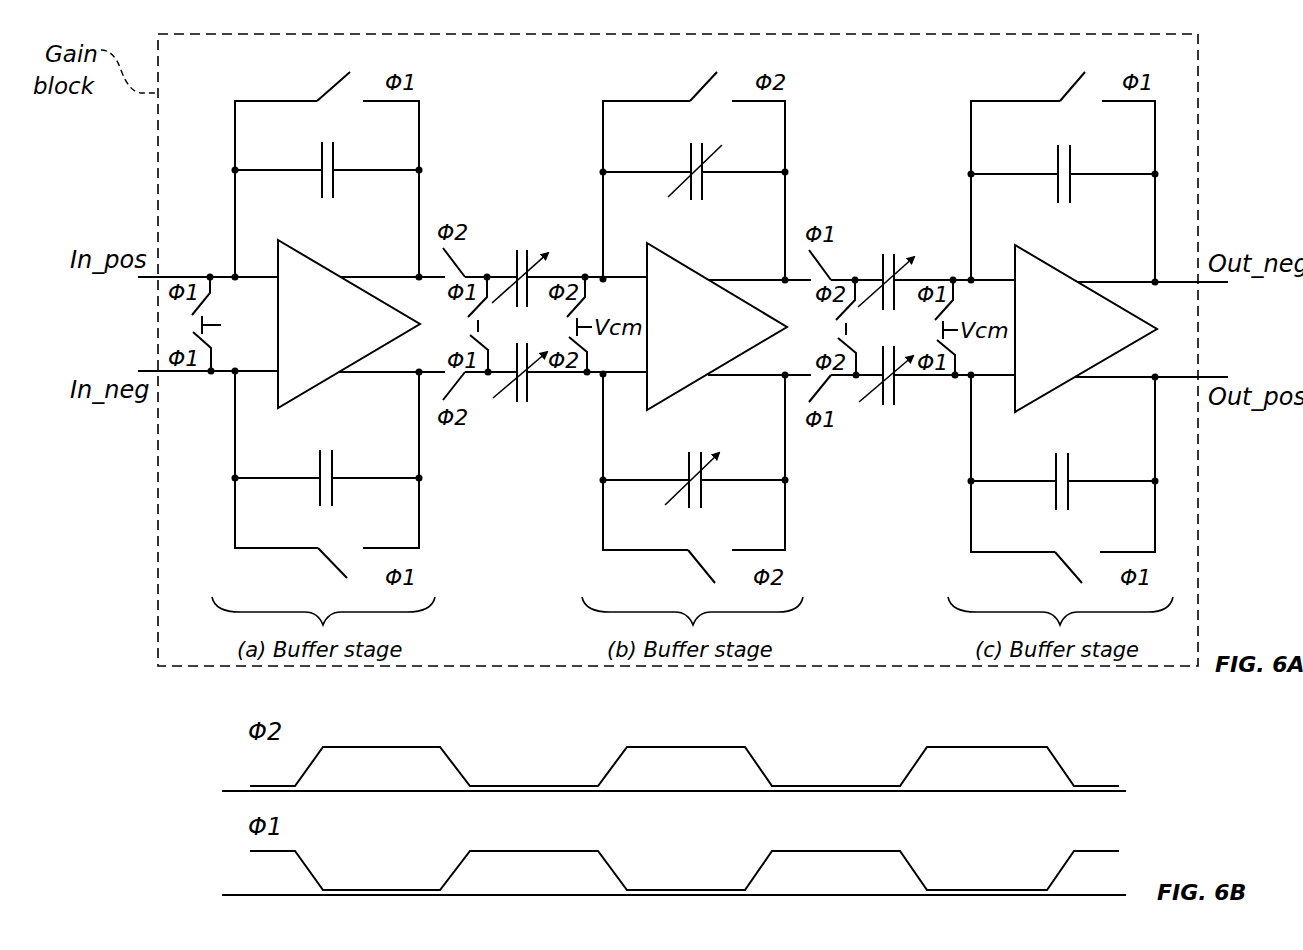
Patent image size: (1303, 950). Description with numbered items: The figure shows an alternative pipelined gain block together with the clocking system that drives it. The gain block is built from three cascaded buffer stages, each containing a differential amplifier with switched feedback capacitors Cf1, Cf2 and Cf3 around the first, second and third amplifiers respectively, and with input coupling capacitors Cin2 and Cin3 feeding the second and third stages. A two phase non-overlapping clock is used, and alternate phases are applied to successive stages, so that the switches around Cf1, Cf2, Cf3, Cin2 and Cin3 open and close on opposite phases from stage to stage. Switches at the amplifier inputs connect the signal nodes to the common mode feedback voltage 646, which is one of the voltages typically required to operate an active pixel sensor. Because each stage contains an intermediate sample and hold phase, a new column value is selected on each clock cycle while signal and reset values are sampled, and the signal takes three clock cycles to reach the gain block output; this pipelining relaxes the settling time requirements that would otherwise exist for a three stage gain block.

The common mode feedback voltage Vcm 646 is at (238, 308).
The feedback capacitor of first buffer stage Cf1 is at (348, 323).
The variable feedback capacitor of second buffer stage Cf2 is at (713, 323).
The feedback capacitor of third buffer stage Cf3 is at (1089, 324).
The variable input capacitor of second buffer stage Cin2 is at (520, 327).
The variable input capacitor of third buffer stage Cin3 is at (886, 329).